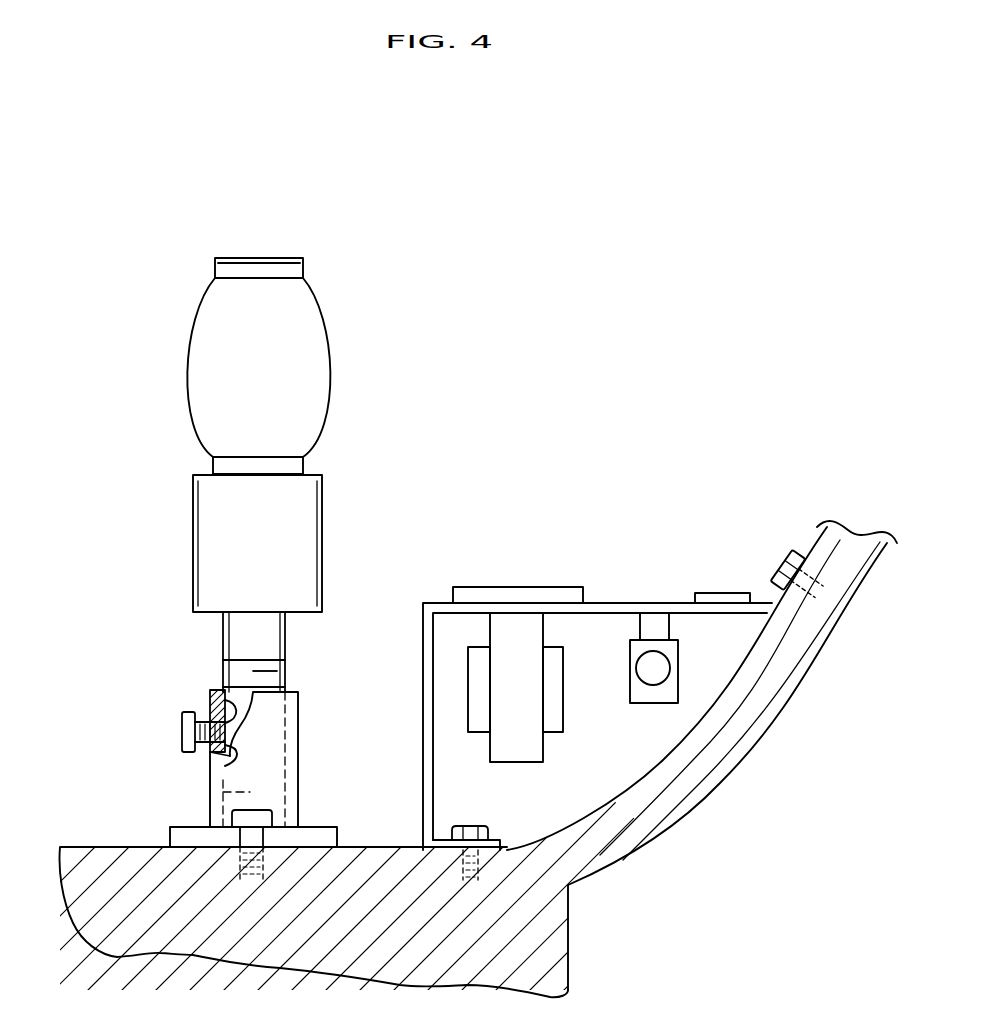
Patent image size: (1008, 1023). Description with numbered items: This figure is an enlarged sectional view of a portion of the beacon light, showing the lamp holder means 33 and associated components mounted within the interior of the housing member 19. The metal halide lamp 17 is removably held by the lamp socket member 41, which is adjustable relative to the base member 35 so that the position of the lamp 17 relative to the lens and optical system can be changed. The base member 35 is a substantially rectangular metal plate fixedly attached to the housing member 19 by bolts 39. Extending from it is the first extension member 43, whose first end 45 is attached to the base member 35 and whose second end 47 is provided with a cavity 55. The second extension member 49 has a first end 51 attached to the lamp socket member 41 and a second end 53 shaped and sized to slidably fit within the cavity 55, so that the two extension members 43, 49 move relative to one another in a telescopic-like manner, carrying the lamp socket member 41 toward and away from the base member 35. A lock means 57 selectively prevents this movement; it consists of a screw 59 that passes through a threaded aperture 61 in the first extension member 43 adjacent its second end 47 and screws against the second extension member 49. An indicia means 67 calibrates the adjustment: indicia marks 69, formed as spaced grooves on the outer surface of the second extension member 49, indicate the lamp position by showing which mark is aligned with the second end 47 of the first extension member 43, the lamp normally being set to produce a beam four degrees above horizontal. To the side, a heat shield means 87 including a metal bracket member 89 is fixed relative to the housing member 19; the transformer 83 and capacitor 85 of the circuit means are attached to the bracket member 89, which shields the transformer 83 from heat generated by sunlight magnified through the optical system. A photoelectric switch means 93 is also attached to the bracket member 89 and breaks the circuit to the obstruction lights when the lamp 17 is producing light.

The metal halide lamp 17 is at (308, 305).
The housing member 19 is at (760, 715).
The lamp holder means 33 is at (107, 634).
The base member 35 is at (170, 832).
The bolts 39 is at (255, 810).
The lamp socket member 41 is at (313, 497).
The first extension member 43 is at (298, 742).
The first end 45 is at (300, 818).
The second end 47 is at (298, 712).
The second extension member 49 is at (225, 640).
The first end 51 is at (230, 617).
The second end 53 is at (243, 773).
The cavity 55 is at (230, 766).
The lock means 57 is at (125, 696).
The screw 59 is at (190, 729).
The threaded aperture 61 is at (223, 695).
The indicia means 67 is at (350, 634).
The indicia marks 69 is at (265, 687).
The transformer 83 is at (535, 740).
The capacitor 85 is at (535, 572).
The heat shield means 87 is at (423, 664).
The bracket member 89 is at (668, 613).
The photoelectric switch means 93 is at (740, 646).